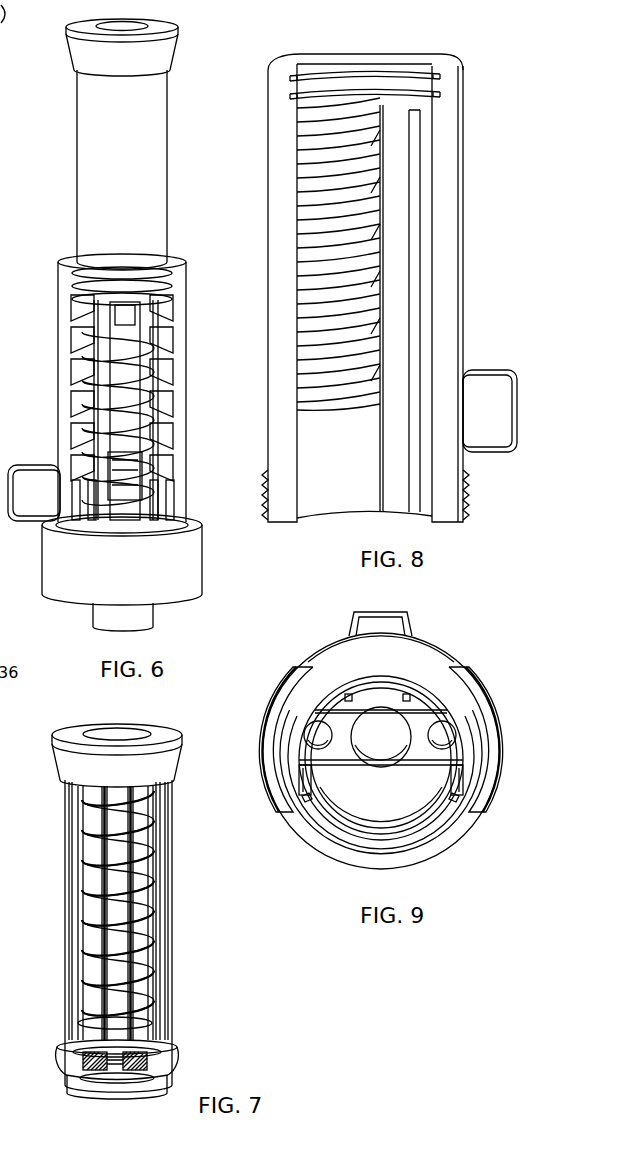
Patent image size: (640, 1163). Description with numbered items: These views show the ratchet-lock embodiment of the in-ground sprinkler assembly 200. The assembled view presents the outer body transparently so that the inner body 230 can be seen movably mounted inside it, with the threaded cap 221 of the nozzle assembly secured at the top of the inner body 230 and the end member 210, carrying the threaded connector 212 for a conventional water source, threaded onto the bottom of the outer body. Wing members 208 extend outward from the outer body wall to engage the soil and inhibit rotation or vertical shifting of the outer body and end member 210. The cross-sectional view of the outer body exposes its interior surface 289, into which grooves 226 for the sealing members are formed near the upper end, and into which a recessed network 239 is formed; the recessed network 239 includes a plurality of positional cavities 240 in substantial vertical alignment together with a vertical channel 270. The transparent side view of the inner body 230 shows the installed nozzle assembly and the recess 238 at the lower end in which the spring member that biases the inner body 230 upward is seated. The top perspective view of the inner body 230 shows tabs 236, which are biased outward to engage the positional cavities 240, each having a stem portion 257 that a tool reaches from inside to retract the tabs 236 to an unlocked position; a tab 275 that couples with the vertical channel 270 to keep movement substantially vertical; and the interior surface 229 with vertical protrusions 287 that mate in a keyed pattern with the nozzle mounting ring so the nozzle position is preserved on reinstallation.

In FIG. 6, the in-ground sprinkler assembly 200 is at (213, 210).
In FIG. 8, the wing members 208 is at (488, 383).
In FIG. 6, the end member 210 is at (203, 578).
In FIG. 6, the threaded connector 212 is at (153, 618).
In FIG. 7, the threaded cap 221 is at (179, 762).
In FIG. 8, the grooves 226 is at (292, 81).
In FIG. 9, the interior surface 229 is at (350, 840).
In FIG. 6, the inner body 230 is at (167, 160).
In FIG. 7, the inner body 230 is at (172, 920).
In FIG. 9, the tabs 236 is at (289, 676).
In FIG. 7, the recess 238 is at (168, 1091).
In FIG. 8, the recessed network 239 is at (351, 502).
In FIG. 8, the positional cavities 240 is at (338, 122).
In FIG. 9, the stem portion 257 is at (413, 753).
In FIG. 8, the vertical channel 270 is at (425, 290).
In FIG. 9, the tabs 275 is at (388, 618).
In FIG. 9, the vertical protrusions 287 is at (408, 697).
In FIG. 8, the interior surface 289 is at (398, 170).